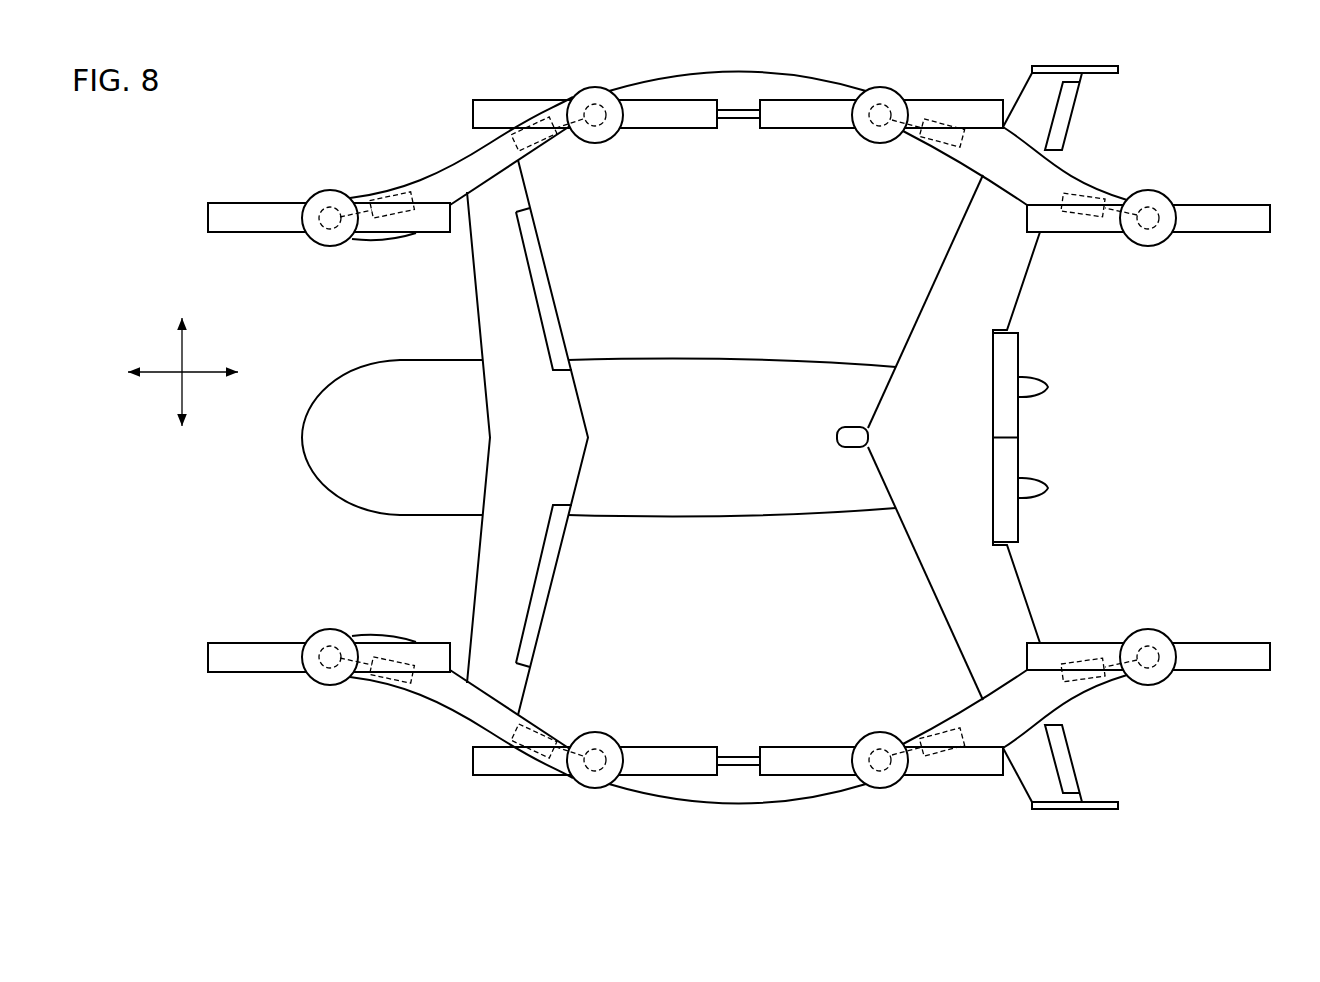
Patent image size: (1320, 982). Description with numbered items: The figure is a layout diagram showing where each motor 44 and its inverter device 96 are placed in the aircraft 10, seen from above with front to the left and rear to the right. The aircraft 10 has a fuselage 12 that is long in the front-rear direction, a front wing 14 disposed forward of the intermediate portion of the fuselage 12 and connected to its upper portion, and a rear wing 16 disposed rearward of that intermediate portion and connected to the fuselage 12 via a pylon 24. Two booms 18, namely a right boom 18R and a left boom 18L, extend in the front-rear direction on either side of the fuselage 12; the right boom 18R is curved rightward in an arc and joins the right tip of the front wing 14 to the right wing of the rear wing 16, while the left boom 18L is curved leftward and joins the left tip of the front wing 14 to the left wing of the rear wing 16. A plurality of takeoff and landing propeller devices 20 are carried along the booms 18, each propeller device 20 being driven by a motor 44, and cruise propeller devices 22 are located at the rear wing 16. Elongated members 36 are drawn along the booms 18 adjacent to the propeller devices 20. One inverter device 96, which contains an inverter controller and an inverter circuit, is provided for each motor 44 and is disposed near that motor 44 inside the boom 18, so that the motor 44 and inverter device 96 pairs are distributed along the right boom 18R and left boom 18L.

The aircraft 10 is at (118, 137).
The fuselage 12 is at (678, 355).
The front wing 14 is at (514, 297).
The rear wing 16 is at (952, 303).
The boom 18 is at (736, 438).
The right boom 18R is at (453, 167).
The left boom 18L is at (453, 710).
The takeoff and landing propeller device 20 is at (316, 180).
The cruise propeller device 22 is at (1031, 361).
The pylon 24 is at (834, 440).
The rotor support member 36 is at (228, 212).
The motor 44 is at (325, 228).
The inverter device 96 is at (396, 216).